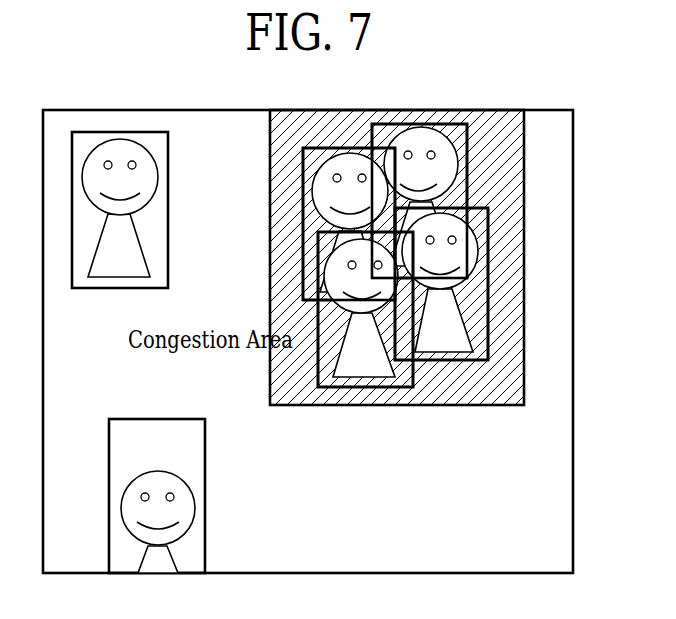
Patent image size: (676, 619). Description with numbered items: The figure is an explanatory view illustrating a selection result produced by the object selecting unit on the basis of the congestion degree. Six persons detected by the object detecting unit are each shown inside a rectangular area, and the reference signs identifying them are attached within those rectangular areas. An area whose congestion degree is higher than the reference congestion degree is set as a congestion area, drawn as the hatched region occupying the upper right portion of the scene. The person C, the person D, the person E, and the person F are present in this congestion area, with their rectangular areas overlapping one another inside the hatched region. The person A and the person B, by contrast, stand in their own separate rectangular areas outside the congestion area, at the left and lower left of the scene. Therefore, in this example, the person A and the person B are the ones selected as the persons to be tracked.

The person A is at (120, 210).
The person B is at (157, 496).
The person C is at (349, 222).
The person D is at (419, 200).
The person E is at (365, 309).
The person F is at (441, 284).